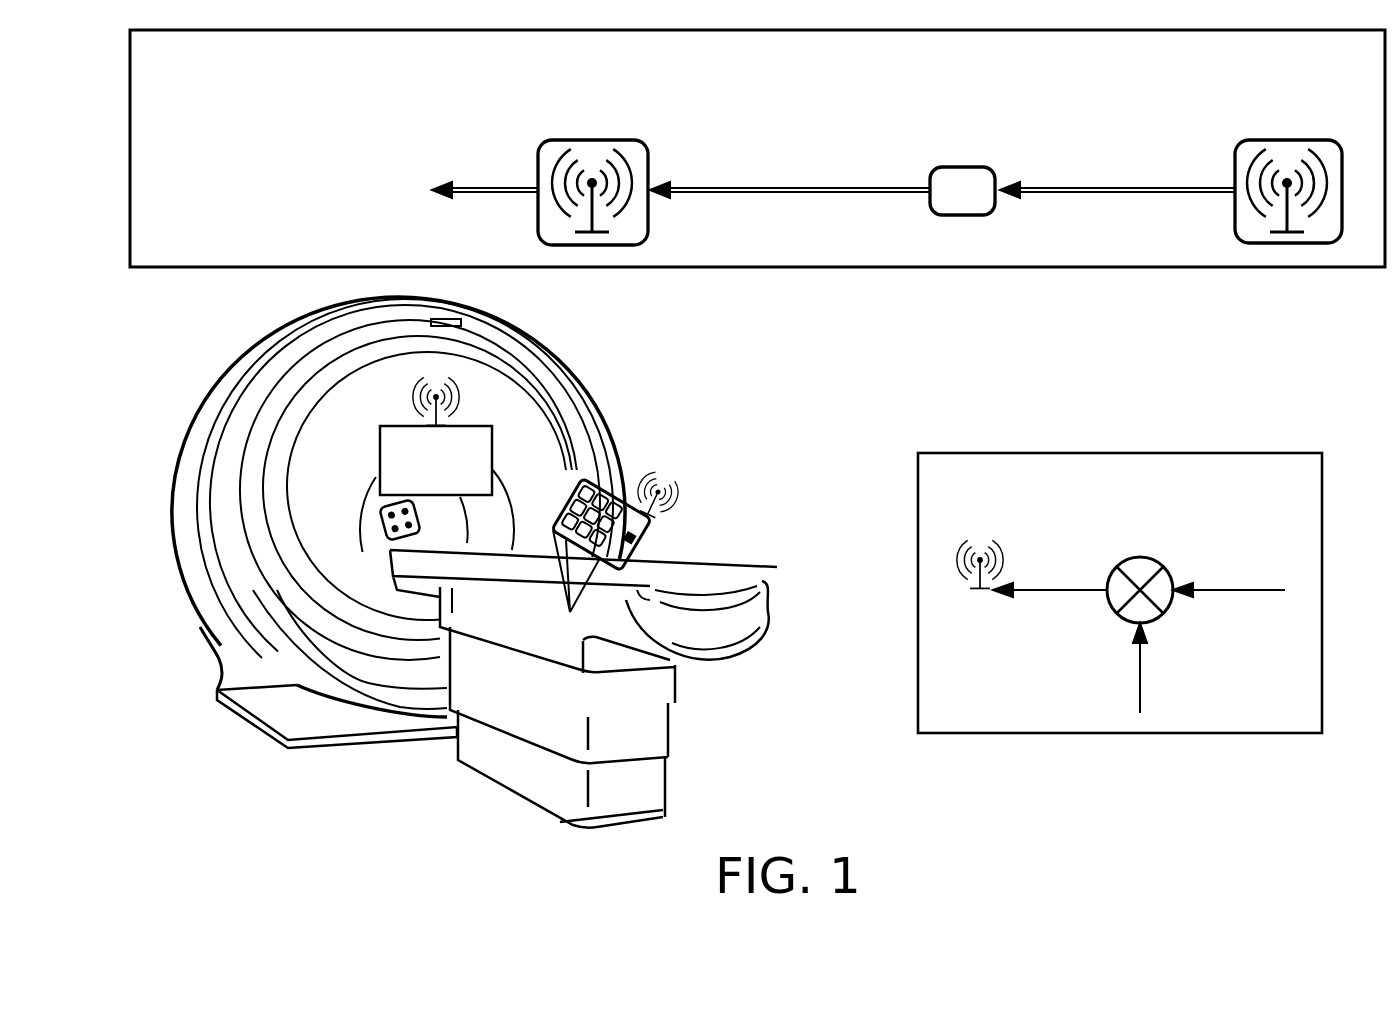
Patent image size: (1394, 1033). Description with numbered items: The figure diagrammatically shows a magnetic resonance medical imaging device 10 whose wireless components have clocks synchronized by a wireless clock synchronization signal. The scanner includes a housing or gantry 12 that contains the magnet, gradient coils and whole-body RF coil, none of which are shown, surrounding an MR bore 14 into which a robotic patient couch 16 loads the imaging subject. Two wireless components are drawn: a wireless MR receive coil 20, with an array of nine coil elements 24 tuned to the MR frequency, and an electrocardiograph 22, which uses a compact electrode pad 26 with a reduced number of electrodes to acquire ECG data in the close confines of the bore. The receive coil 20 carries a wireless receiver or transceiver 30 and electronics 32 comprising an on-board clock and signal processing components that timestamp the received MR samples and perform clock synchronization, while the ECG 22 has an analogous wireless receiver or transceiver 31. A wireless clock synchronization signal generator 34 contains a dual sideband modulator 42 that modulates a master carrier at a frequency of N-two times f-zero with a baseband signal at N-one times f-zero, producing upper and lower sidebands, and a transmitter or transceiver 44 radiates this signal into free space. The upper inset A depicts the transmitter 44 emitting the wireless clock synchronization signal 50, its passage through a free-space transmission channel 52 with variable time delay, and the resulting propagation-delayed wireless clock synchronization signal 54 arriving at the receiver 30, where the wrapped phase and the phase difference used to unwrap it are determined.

The upper inset A is at (130, 95).
The medical imaging device 10 is at (220, 762).
The housing or gantry 12 is at (194, 413).
The MR bore 14 is at (390, 497).
The robotic patient couch 16 is at (762, 607).
The wireless MR receive coil 20 is at (623, 467).
The electrocardiograph 22 is at (380, 442).
The coil element 24 is at (553, 607).
The compact electrode pad 26 is at (380, 516).
The wireless receiver or transceiver 30 is at (592, 245).
The wireless receiver or transceiver 31 is at (457, 400).
The electronics 32 is at (645, 543).
The wireless clock synchronization signal generator 34 is at (1227, 453).
The dual sideband modulator 42 is at (1143, 558).
The transmitter or transceiver 44 is at (1287, 243).
The wireless clock synchronization signal 50 is at (1000, 221).
The transmission channel 52 is at (930, 221).
The propagation-delayed wireless clock synchronization signal 54 is at (650, 221).